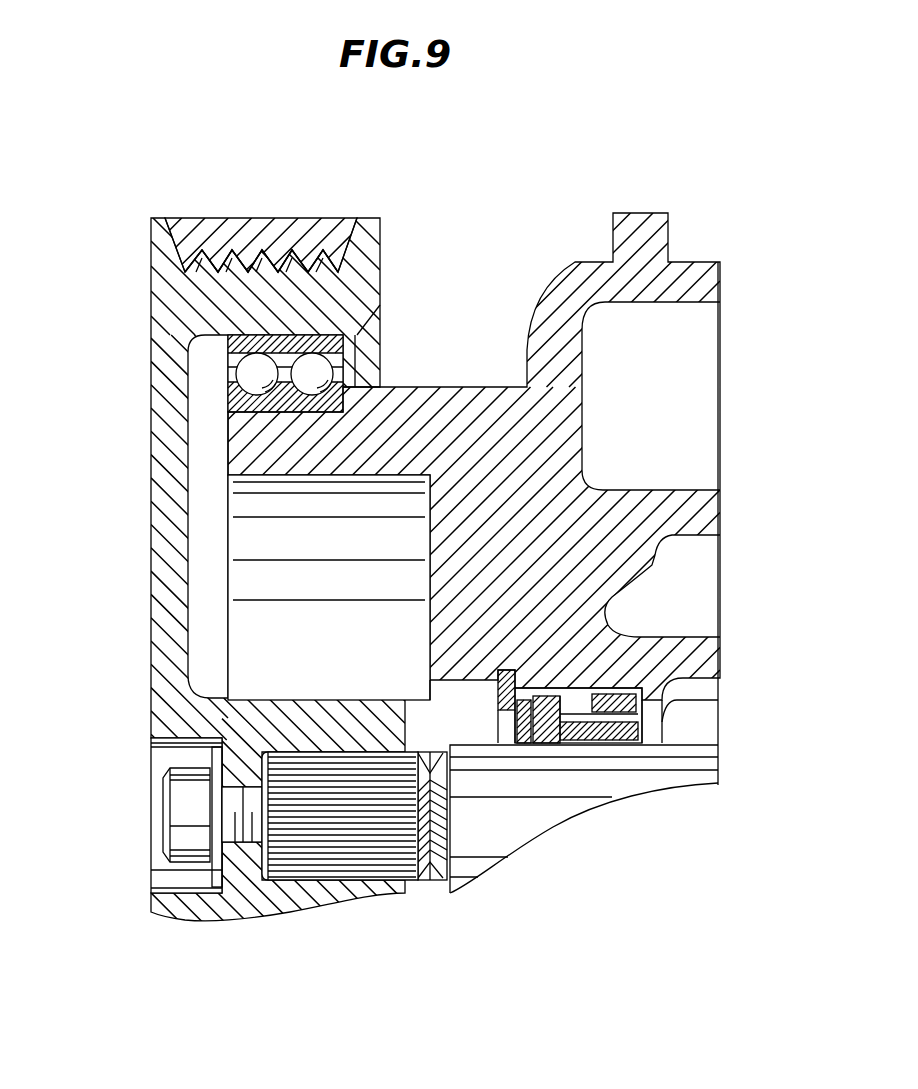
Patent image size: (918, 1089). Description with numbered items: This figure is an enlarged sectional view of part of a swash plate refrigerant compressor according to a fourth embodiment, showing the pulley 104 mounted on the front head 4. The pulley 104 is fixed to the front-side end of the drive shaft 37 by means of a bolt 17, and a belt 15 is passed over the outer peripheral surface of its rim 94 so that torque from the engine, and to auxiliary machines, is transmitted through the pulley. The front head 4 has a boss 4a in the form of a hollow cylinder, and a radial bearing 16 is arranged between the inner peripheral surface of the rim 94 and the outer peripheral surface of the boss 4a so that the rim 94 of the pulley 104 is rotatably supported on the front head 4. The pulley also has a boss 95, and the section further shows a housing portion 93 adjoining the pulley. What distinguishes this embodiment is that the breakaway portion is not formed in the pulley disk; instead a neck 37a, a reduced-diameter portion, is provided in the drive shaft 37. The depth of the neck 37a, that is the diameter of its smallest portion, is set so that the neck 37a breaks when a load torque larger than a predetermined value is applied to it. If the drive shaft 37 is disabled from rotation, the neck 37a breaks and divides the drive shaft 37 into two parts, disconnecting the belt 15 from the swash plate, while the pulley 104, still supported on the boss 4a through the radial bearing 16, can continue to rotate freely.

The pulley 104 is at (245, 527).
The belt 15 is at (255, 222).
The rim 94 is at (380, 258).
The front head 4 is at (474, 473).
The boss 4a is at (415, 398).
The radial bearing 16 is at (248, 368).
The housing member 93 is at (162, 477).
The boss 95 is at (332, 722).
The bolt 17 is at (173, 808).
The drive shaft 37 is at (568, 875).
The neck 37a is at (440, 880).